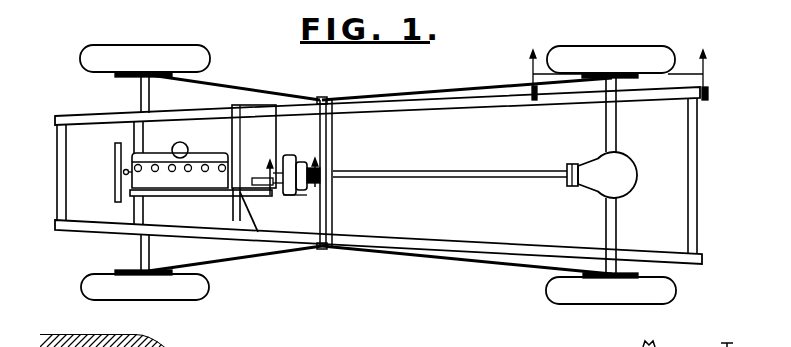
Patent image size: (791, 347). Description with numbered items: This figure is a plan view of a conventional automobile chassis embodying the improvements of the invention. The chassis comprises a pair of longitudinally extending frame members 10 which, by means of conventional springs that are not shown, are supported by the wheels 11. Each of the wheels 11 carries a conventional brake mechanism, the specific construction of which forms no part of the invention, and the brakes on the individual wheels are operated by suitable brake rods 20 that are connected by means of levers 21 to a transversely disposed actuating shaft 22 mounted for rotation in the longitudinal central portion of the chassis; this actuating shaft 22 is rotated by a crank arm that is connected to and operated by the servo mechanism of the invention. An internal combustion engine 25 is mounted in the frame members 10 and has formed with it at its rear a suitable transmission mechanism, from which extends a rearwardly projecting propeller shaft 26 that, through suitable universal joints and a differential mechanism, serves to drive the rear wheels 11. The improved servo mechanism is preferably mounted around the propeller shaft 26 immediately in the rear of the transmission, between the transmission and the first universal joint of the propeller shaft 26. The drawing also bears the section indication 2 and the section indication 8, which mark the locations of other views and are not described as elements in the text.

The section line 2- 2 is at (343, 163).
The dimension / adjustment indicator 8 is at (615, 75).
The frame side rails 10 is at (448, 109).
The wheels 11 is at (182, 47).
The diagonal brace rods 20 is at (232, 87).
The rod joint 21 is at (323, 97).
The center cross post 22 is at (326, 143).
The motor 25 is at (150, 165).
The drive shaft 26 is at (452, 169).